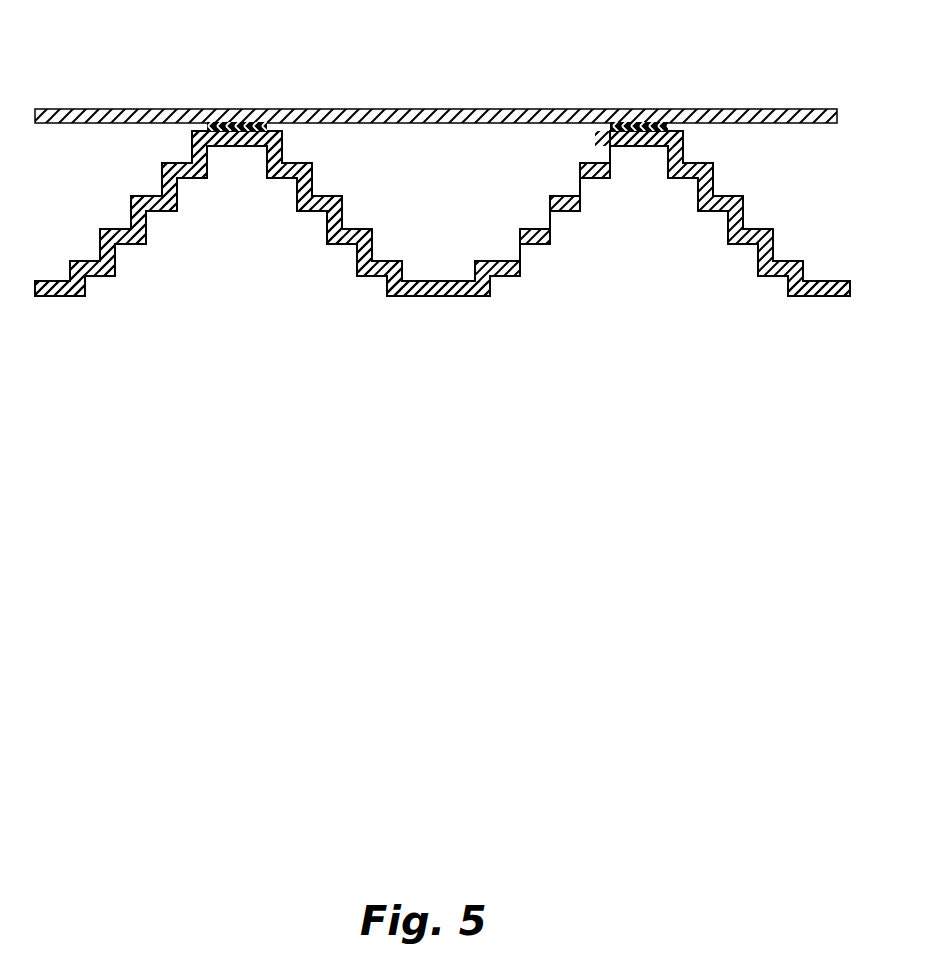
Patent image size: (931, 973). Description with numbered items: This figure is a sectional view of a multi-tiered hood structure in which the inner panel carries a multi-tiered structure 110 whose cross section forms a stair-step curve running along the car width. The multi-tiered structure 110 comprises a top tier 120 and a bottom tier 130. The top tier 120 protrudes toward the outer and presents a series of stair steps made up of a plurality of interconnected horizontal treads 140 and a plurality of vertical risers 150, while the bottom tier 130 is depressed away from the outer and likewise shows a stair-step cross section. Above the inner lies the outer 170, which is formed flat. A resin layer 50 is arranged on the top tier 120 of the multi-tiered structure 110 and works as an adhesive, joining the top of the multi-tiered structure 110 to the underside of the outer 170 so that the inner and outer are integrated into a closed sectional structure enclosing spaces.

The resin layer 50 is at (257, 118).
The multi-tiered structure 110 is at (259, 285).
The top tier 120 is at (238, 135).
The bottom tier 130 is at (60, 295).
The horizontal treads 140 is at (207, 129).
The vertical risers 150 is at (403, 273).
The outer 170 is at (732, 97).